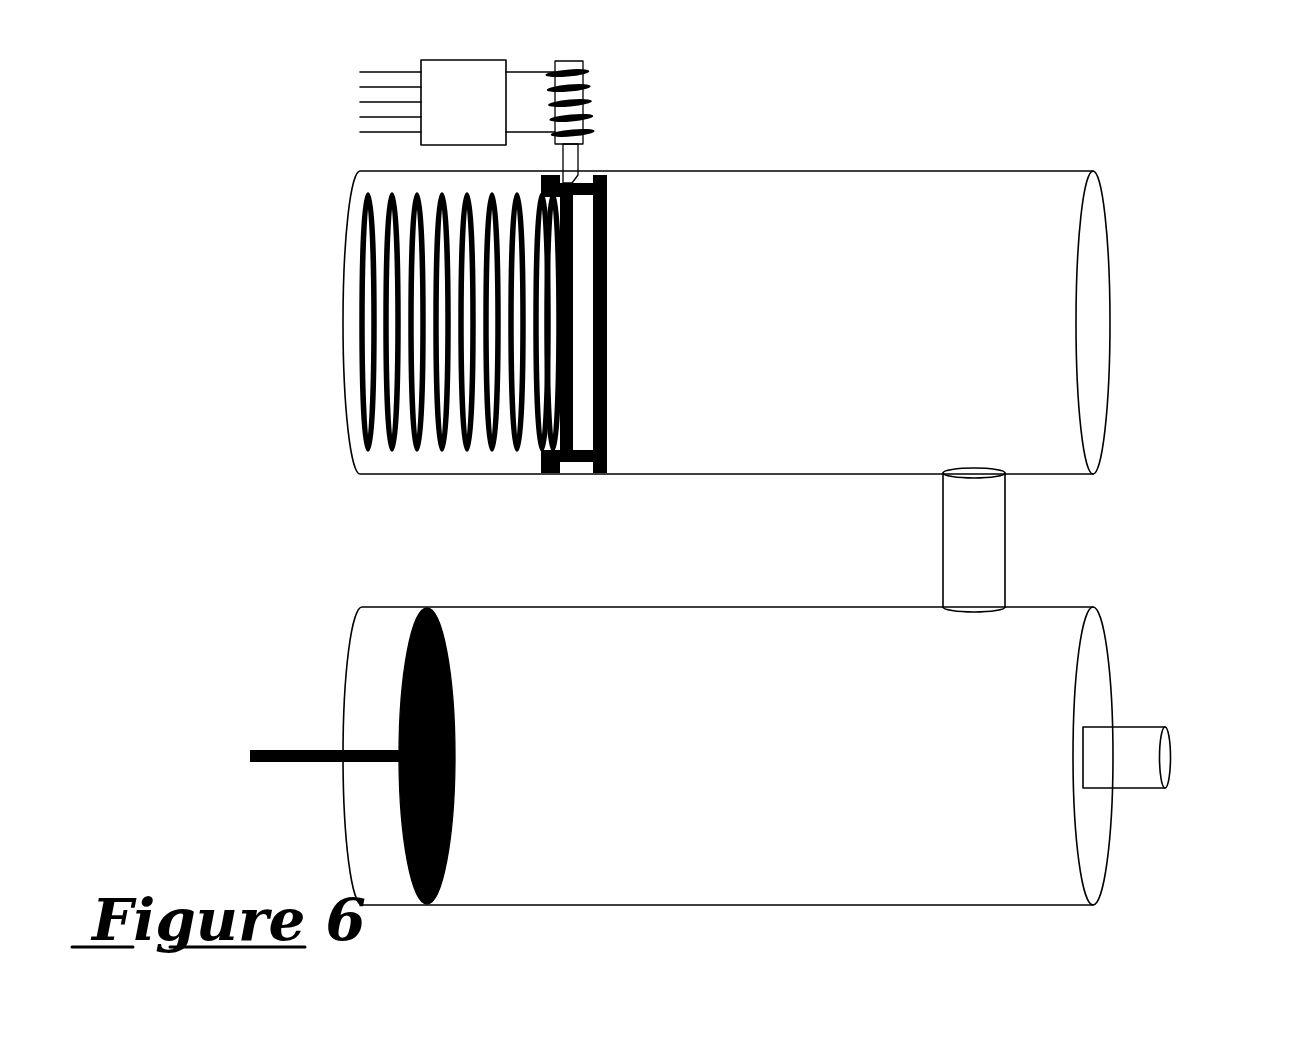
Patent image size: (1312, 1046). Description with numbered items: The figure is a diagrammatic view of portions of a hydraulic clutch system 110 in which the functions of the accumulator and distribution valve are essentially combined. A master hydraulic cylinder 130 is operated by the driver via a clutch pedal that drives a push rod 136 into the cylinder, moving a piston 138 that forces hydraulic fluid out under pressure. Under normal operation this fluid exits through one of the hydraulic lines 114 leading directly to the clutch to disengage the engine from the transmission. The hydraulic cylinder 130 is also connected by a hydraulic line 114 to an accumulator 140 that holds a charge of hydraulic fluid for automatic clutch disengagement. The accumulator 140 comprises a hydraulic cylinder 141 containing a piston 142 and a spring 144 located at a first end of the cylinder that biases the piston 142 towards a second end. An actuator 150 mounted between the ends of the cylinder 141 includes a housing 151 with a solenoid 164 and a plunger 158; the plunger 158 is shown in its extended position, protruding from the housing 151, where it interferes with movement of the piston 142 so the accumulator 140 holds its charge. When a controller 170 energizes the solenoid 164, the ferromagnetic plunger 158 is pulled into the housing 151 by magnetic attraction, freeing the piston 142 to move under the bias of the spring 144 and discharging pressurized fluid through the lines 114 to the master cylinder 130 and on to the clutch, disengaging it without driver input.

The hydraulic clutch system 110 is at (754, 474).
The hydraulic line 114 is at (1135, 742).
The hydraulic cylinder 130 is at (747, 607).
The push rod 136 is at (295, 750).
The piston 138 is at (451, 668).
The accumulator 140 is at (675, 259).
The hydraulic cylinder 141 is at (933, 172).
The piston 142 is at (607, 257).
The spring 144 is at (362, 226).
The actuator 150 is at (654, 116).
The housing 151 is at (578, 60).
The plunger 158 is at (573, 159).
The solenoid 164 is at (580, 103).
The controller 170 is at (457, 102).